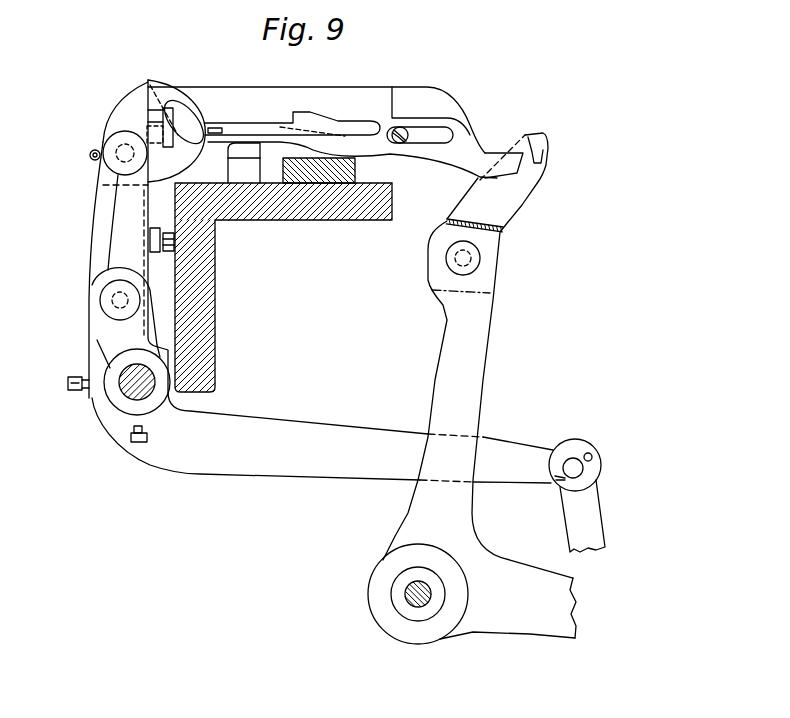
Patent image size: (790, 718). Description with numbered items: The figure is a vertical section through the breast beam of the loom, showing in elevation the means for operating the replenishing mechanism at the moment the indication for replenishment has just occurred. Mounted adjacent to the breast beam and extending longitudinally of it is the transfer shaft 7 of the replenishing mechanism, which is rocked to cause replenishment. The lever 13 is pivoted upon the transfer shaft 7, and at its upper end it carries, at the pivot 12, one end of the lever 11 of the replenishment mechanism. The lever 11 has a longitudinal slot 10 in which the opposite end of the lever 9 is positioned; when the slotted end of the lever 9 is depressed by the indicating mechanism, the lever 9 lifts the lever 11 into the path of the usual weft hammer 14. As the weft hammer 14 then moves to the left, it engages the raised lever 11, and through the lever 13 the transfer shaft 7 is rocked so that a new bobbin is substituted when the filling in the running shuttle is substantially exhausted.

The transfer shaft 7 is at (128, 392).
The lever 9 is at (404, 143).
The longitudinal slot 10 is at (433, 137).
The lever 11 is at (361, 96).
The pivot 12 is at (118, 150).
The lever 13 is at (102, 238).
The weft hammer 14 is at (472, 352).